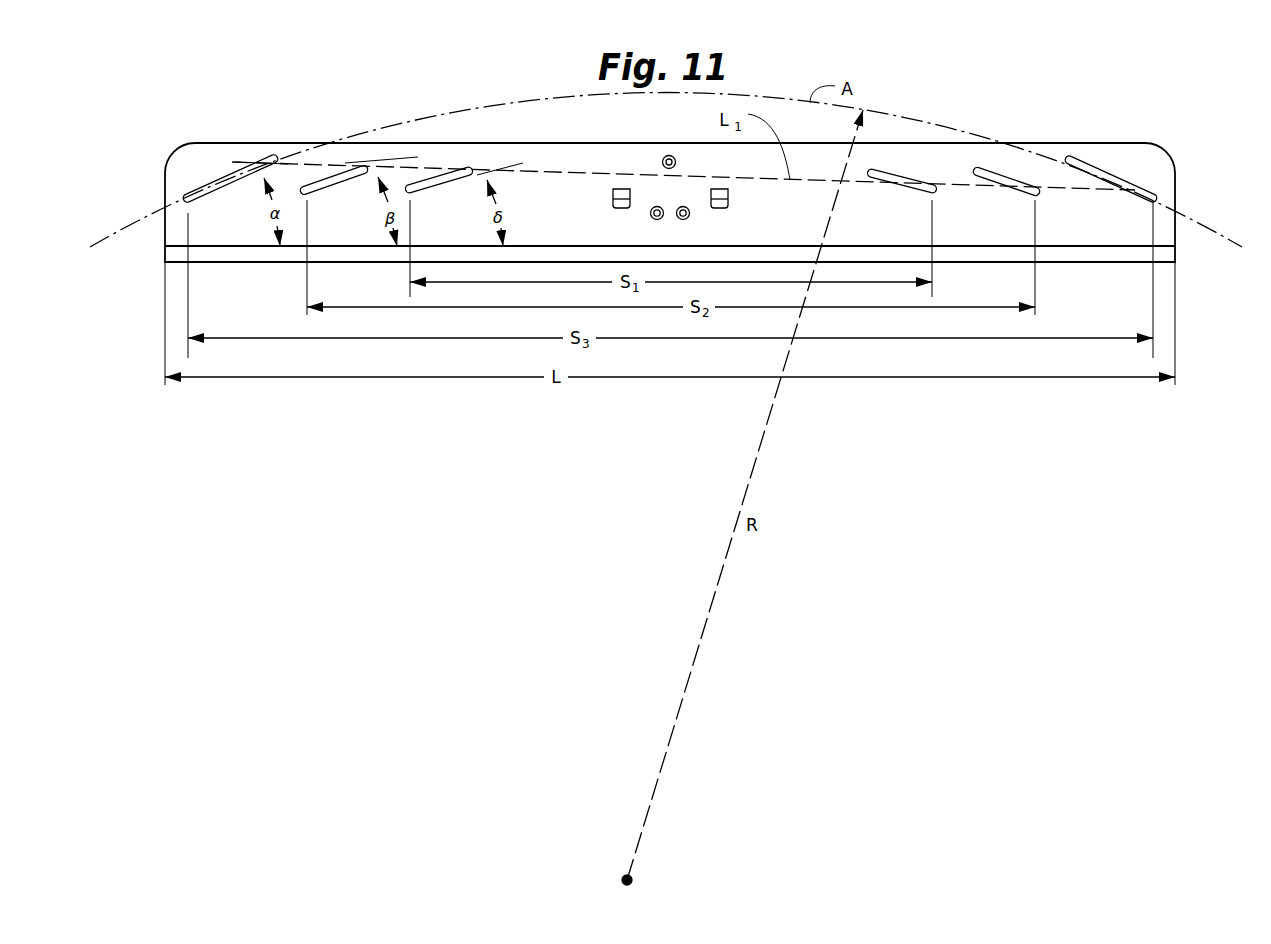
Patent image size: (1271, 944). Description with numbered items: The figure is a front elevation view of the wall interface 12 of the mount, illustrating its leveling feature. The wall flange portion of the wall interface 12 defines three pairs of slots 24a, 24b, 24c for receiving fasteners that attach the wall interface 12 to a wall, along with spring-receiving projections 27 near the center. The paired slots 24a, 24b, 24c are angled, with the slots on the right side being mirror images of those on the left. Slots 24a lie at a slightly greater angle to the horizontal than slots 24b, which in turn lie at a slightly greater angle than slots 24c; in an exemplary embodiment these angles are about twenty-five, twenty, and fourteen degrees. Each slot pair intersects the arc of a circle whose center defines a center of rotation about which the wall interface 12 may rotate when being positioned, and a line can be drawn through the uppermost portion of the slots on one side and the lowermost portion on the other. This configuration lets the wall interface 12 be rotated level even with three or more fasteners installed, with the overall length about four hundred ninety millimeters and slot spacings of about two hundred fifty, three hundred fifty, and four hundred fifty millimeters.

The wall interface 12 is at (803, 222).
The slots 24a is at (218, 180).
The slots 24b is at (337, 175).
The slots 24c is at (457, 171).
The spring-receiving projections 27 is at (719, 188).